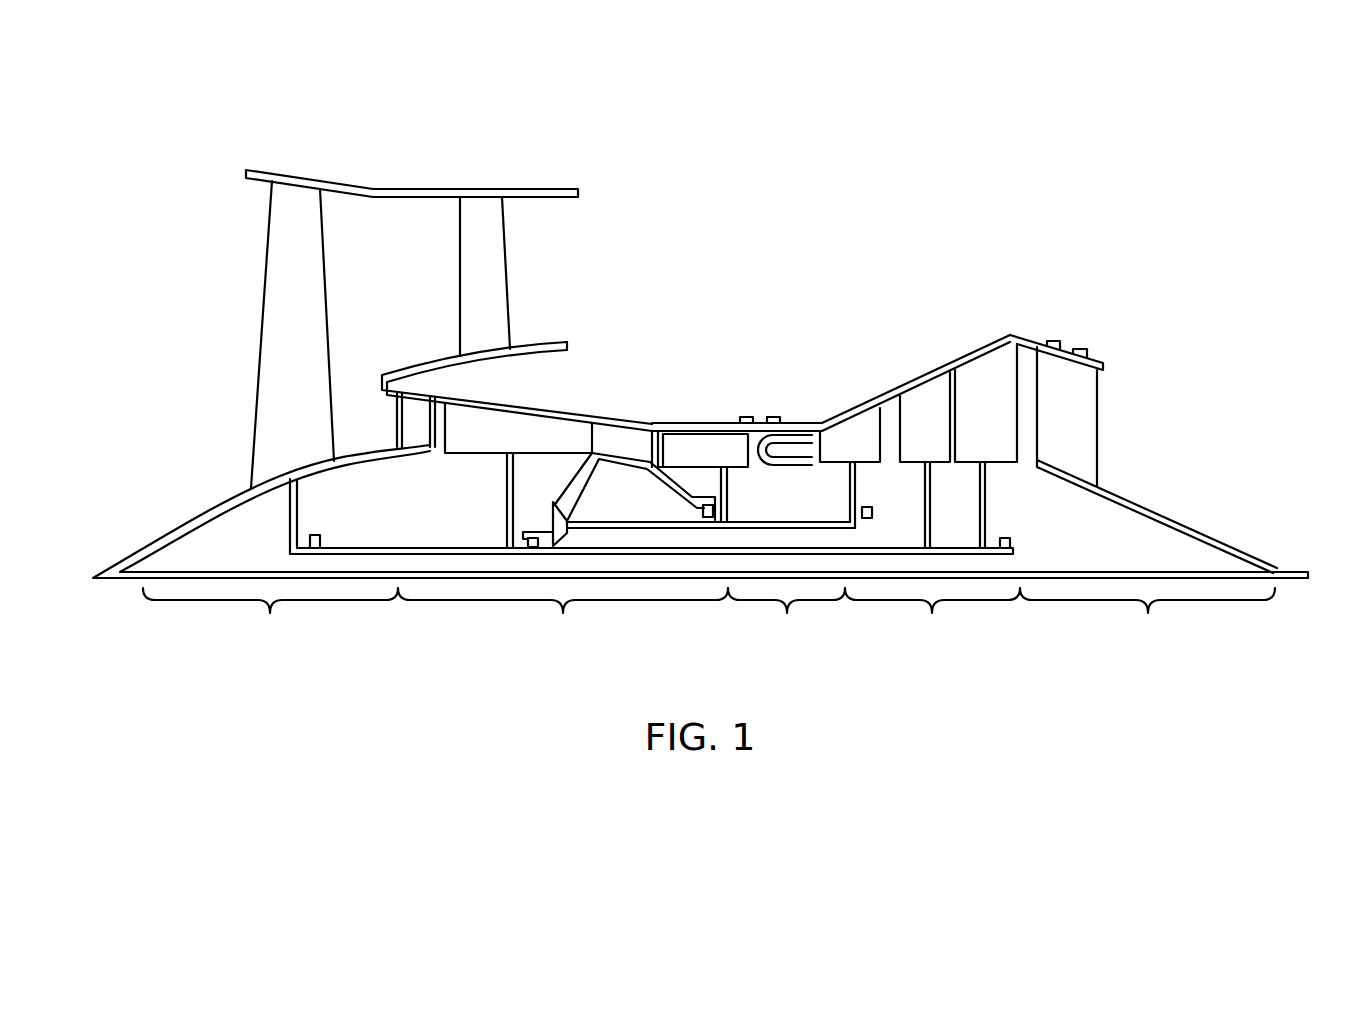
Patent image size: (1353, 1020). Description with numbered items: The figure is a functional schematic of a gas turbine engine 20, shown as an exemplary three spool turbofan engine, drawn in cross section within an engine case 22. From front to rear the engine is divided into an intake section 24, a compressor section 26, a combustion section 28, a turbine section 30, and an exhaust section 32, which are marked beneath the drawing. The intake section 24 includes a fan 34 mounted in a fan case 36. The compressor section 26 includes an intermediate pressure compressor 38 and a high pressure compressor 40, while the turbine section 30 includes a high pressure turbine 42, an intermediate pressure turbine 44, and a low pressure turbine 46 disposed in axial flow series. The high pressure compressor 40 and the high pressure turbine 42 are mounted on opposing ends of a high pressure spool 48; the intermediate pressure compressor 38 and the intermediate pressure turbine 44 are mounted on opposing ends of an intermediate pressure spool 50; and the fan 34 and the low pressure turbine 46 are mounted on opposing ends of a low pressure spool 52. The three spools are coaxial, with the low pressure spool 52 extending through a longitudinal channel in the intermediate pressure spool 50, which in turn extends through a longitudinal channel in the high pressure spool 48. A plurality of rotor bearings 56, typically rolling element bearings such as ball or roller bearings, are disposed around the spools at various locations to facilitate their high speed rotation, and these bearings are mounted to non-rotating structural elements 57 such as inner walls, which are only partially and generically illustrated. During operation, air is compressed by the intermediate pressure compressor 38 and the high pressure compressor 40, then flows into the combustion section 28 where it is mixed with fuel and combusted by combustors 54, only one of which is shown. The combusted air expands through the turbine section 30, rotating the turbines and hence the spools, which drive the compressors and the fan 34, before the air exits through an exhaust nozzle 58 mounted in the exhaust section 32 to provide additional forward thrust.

The gas turbine engine 20 is at (153, 438).
The engine case 22 is at (627, 422).
The intake section 24 is at (270, 620).
The compressor section 26 is at (563, 620).
The combustion section 28 is at (786, 620).
The turbine section 30 is at (932, 620).
The exhaust section 32 is at (1147, 620).
The fan 34 is at (268, 264).
The fan case 36 is at (397, 188).
The intermediate pressure compressor 38 is at (536, 430).
The high pressure compressor 40 is at (703, 440).
The high pressure turbine 42 is at (866, 422).
The intermediate pressure turbine 44 is at (922, 400).
The low pressure turbine 46 is at (985, 373).
The high pressure spool 48 is at (792, 521).
The intermediate pressure spool 50 is at (836, 546).
The low pressure spool 52 is at (446, 546).
The combustor 54 is at (788, 440).
The rotor bearings 56 is at (315, 535).
The non-rotating structural elements 57 is at (618, 465).
The exhaust nozzle 58 is at (1093, 417).